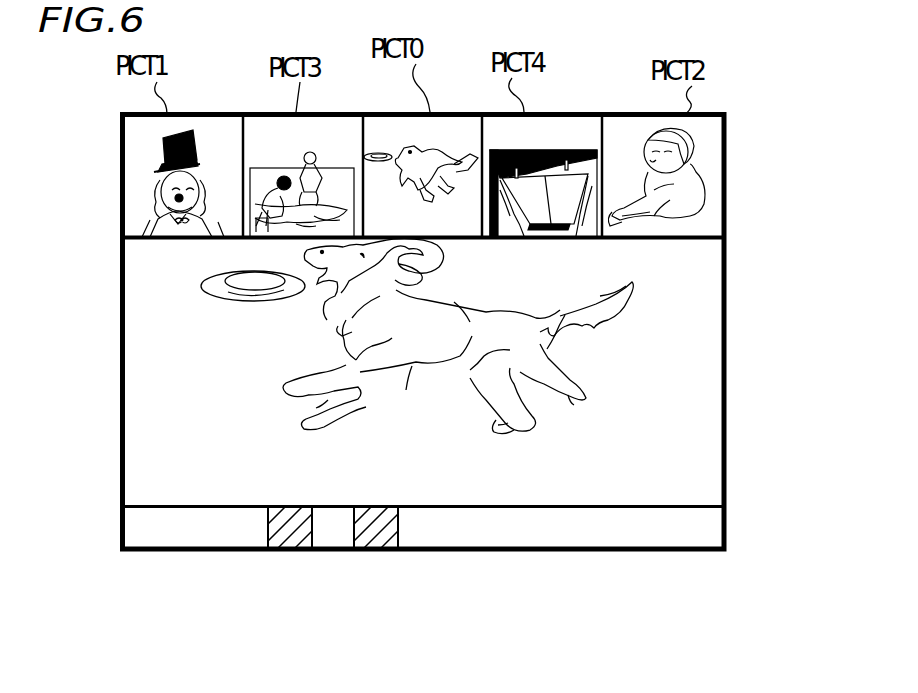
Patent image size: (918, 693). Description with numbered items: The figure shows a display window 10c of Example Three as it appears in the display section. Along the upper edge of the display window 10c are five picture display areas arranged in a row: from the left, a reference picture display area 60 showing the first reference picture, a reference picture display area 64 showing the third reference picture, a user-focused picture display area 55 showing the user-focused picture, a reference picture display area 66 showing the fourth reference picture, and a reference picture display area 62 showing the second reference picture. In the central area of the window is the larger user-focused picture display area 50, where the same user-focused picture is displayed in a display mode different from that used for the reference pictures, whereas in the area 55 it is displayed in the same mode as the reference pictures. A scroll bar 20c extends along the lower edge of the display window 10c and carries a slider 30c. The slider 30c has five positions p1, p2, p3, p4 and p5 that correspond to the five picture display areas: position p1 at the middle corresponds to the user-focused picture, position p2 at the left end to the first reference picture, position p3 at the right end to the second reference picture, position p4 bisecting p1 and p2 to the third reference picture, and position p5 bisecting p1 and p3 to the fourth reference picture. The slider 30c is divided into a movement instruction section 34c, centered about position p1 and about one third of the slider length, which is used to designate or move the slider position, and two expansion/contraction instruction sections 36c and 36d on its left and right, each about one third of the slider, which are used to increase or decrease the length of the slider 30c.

The display window 10c is at (443, 73).
The reference picture display area 60 is at (138, 140).
The reference picture display area 64 is at (263, 120).
The user-focused picture display area 55 is at (398, 122).
The reference picture display area 66 is at (583, 120).
The reference picture display area 62 is at (715, 166).
The user-focused picture display area 50 is at (704, 437).
The scroll bar 20c is at (700, 531).
The slider 30c is at (333, 579).
The expansion/contraction instruction section 36c is at (278, 552).
The movement instruction section 34c is at (332, 552).
The expansion/contraction instruction section 36d is at (376, 552).
The position p1 is at (336, 506).
The position p2 is at (275, 495).
The position p3 is at (386, 506).
The position p4 is at (304, 494).
The position p5 is at (369, 506).